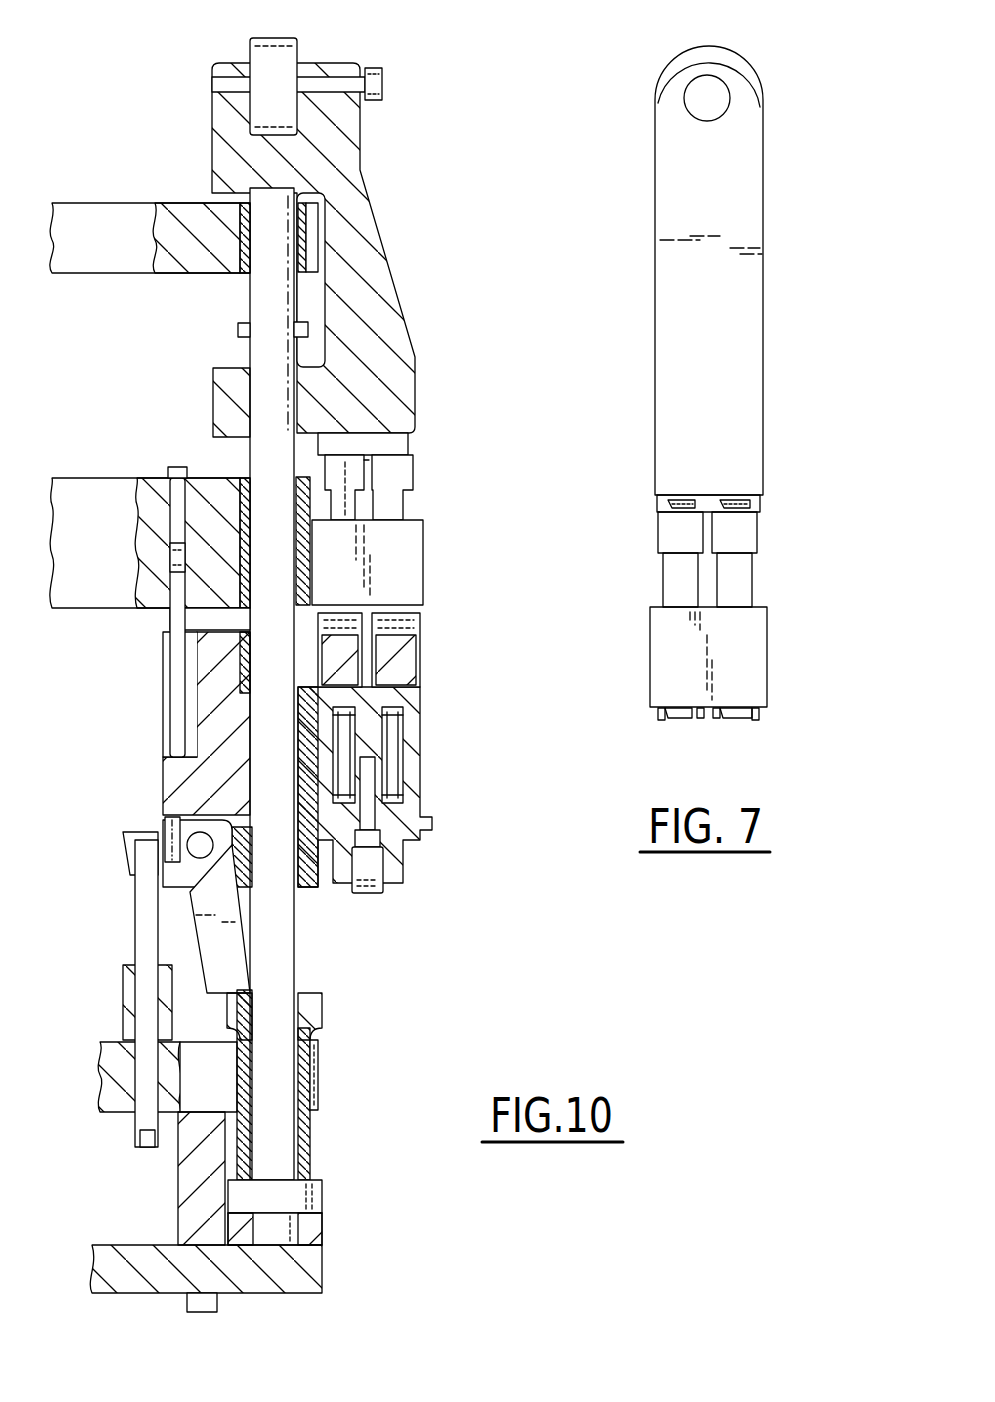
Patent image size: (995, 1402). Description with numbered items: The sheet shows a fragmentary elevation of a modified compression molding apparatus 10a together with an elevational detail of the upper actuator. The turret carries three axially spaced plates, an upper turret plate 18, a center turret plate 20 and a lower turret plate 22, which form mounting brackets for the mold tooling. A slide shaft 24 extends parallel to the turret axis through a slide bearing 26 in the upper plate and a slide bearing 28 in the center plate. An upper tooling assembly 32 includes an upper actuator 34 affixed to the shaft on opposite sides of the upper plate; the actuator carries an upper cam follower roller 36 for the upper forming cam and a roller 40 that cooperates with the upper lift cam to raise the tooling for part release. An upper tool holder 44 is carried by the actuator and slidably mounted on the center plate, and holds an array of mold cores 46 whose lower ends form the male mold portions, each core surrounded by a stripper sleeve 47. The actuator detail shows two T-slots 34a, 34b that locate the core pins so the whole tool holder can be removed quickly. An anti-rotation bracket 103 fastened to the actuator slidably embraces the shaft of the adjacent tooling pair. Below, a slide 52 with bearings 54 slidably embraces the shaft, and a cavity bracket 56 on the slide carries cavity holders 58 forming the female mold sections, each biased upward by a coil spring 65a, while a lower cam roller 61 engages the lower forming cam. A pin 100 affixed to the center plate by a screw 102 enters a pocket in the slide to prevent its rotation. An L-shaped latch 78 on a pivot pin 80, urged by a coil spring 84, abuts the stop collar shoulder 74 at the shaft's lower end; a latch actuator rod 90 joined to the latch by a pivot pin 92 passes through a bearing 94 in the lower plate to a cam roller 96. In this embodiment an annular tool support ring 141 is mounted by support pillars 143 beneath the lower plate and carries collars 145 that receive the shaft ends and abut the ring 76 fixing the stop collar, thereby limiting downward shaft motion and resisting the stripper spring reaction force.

In FIG. 10, the modified apparatus 10a is at (485, 201).
In FIG. 10, the upper turret plate 18 is at (95, 214).
In FIG. 10, the center turret plate 20 is at (80, 485).
In FIG. 10, the lower turret plate 22 is at (100, 1072).
In FIG. 10, the slide shaft 24 is at (294, 967).
In FIG. 10, the slide bearing 26 is at (236, 240).
In FIG. 10, the slide bearing 28 is at (243, 478).
In FIG. 10, the upper tooling assembly 32 is at (403, 298).
In FIG. 7, the upper tooling assembly 32 is at (796, 339).
In FIG. 7, the upper actuator 34 is at (749, 272).
In FIG. 7, the T-slot 34a is at (763, 522).
In FIG. 7, the T-slot 34b is at (670, 510).
In FIG. 10, the upper cam follower roller 36 is at (292, 48).
In FIG. 7, the upper cam follower roller 36 is at (744, 72).
In FIG. 10, the roller 40 is at (379, 82).
In FIG. 7, the roller 40 is at (715, 106).
In FIG. 10, the upper tool holder 44 is at (414, 537).
In FIG. 7, the upper tool holder 44 is at (758, 630).
In FIG. 10, the mold core 46 is at (400, 482).
In FIG. 7, the mold core 46 is at (744, 578).
In FIG. 7, the stripper sleeve 47 is at (662, 718).
In FIG. 10, the slide 52 is at (170, 767).
In FIG. 10, the bearing 54 is at (302, 888).
In FIG. 10, the cavity bracket 56 is at (411, 697).
In FIG. 10, the cavity holder 58 is at (398, 658).
In FIG. 10, the lower cam roller 61 is at (377, 866).
In FIG. 10, the coil spring 65a is at (401, 748).
In FIG. 10, the shoulder 74 is at (305, 1123).
In FIG. 10, the ring or collar 76 is at (314, 1187).
In FIG. 10, the latch 78 is at (188, 903).
In FIG. 10, the pivot pin 80 is at (190, 872).
In FIG. 10, the coil spring 84 is at (165, 820).
In FIG. 10, the latch actuator rod 90 is at (140, 982).
In FIG. 10, the pivot pin 92 is at (143, 851).
In FIG. 10, the bearing 94 is at (125, 1010).
In FIG. 10, the cam roller 96 is at (142, 1142).
In FIG. 10, the pin 100 is at (172, 660).
In FIG. 10, the screw 102 is at (178, 466).
In FIG. 10, the anti-rotation bracket 103 is at (240, 330).
In FIG. 10, the tool support ring 141 is at (316, 1267).
In FIG. 10, the support pillar 143 is at (181, 1182).
In FIG. 10, the collar 145 is at (320, 1230).